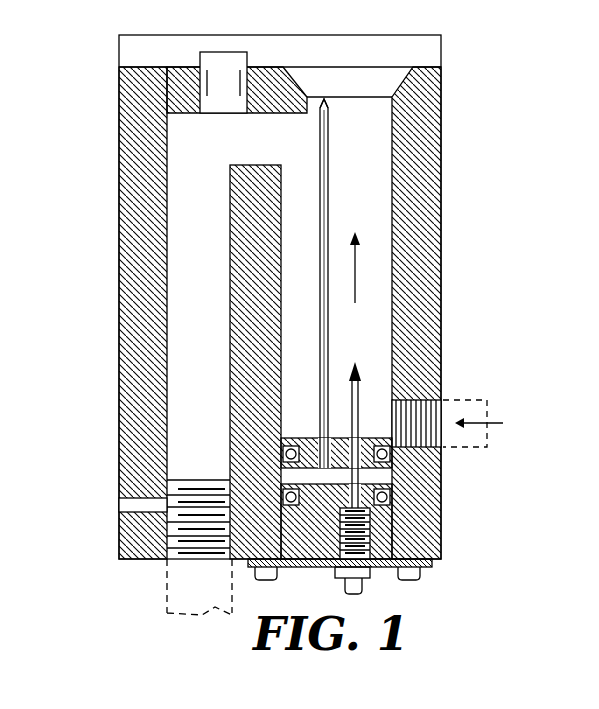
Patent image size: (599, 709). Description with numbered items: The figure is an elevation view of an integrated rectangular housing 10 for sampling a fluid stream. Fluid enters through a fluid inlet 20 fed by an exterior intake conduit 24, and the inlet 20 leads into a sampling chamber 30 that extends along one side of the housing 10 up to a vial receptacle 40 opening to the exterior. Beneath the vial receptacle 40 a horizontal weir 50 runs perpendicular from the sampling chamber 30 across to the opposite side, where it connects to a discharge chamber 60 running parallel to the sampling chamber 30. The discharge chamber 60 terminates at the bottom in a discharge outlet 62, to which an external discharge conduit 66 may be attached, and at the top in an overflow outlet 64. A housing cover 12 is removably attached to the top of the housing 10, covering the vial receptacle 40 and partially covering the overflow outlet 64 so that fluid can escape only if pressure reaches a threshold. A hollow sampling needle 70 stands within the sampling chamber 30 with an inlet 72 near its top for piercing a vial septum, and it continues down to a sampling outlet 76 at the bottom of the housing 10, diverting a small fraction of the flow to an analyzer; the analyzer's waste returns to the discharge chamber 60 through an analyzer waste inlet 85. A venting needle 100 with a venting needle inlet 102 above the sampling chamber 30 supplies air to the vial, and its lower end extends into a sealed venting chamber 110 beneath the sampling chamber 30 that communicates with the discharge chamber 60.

The housing 10 is at (97, 321).
The housing cover 12 is at (142, 53).
The fluid inlet 20 is at (443, 400).
The exterior intake conduit 24 is at (489, 404).
The sampling chamber 30 is at (373, 268).
The vial receptacle 40 is at (323, 88).
The horizontal weir 50 is at (269, 156).
The discharge chamber 60 is at (210, 232).
The discharge outlet 62 is at (192, 530).
The overflow outlet 64 is at (222, 82).
The external discharge conduit 66 is at (178, 585).
The sampling needle 70 is at (311, 566).
The inlet 72 is at (360, 378).
The sampling outlet 76 is at (370, 578).
The analyzer waste inlet 85 is at (118, 507).
The venting needle 100 is at (328, 216).
The venting needle inlet 102 is at (326, 116).
The venting chamber 110 is at (375, 476).